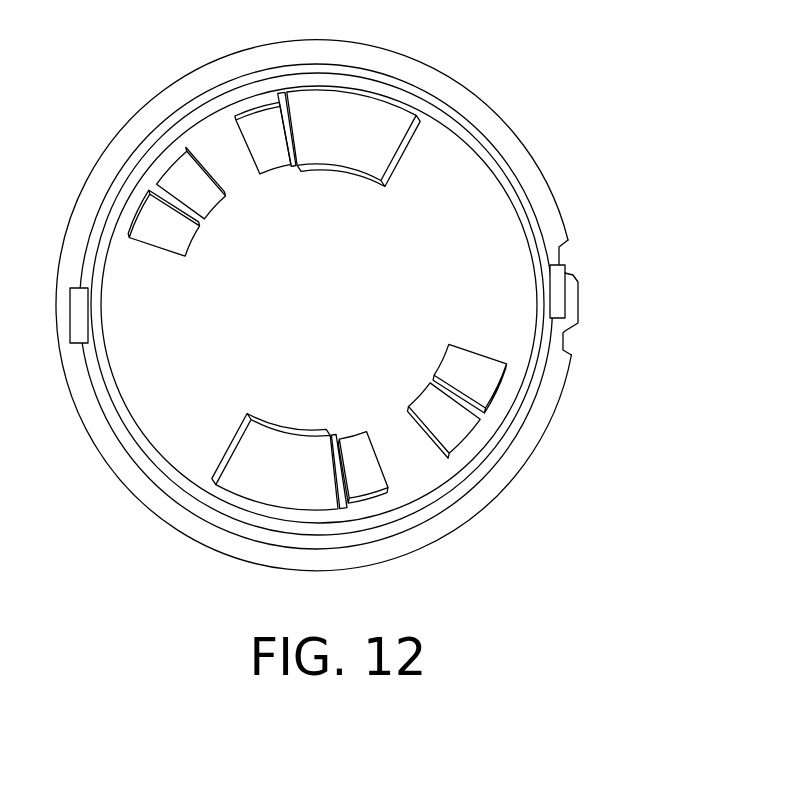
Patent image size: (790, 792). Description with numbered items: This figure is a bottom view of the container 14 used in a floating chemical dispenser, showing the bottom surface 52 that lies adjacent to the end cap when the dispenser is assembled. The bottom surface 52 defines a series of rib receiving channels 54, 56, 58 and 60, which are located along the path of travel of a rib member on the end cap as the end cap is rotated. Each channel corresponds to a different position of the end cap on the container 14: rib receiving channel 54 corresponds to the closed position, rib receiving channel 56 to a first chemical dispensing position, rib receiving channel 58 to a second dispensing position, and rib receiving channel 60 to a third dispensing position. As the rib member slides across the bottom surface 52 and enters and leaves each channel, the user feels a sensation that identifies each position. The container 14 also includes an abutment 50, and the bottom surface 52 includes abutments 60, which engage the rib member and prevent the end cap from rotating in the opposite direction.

The container 14 is at (522, 155).
The abutment 50 is at (358, 125).
The bottom surface 52 is at (518, 268).
The rib receiving channel 54 is at (288, 95).
The rib receiving channel 56 is at (245, 120).
The rib receiving channel 58 is at (196, 155).
The rib receiving channel 60 is at (158, 197).